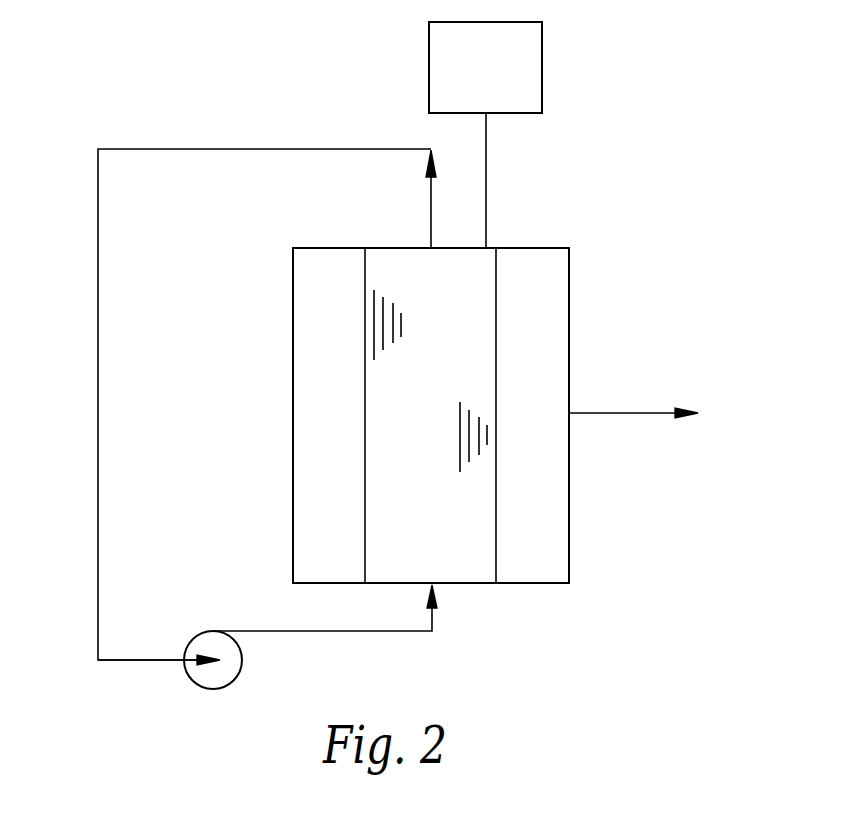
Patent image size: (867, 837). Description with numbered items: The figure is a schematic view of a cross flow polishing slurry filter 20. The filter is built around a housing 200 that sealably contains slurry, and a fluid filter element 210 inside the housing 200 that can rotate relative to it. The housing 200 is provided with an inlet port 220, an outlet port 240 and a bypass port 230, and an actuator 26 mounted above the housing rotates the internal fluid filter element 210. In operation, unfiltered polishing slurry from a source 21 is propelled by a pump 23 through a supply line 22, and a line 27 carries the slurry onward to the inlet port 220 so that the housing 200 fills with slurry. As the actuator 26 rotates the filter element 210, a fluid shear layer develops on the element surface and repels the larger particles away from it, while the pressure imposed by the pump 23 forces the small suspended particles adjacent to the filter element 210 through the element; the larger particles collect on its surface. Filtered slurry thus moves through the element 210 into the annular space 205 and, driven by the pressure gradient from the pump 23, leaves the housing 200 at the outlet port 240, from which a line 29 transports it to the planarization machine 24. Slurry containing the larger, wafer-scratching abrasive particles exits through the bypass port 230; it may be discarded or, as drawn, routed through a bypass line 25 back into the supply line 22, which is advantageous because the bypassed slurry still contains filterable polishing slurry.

The polishing slurry filter 20 is at (667, 112).
The source of unfiltered polishing slurry 21 is at (84, 673).
The supply line 22 is at (135, 662).
The pump 23 is at (197, 632).
The planarization machine 24 is at (739, 425).
The bypass line 25 is at (290, 147).
The actuator 26 is at (497, 82).
The line 27 is at (326, 631).
The line 29 is at (627, 413).
The housing 200 is at (570, 532).
The annular space 205 is at (568, 281).
The fluid filter element 210 is at (485, 527).
The inlet port 220 is at (435, 585).
The bypass port 230 is at (430, 227).
The outlet port 240 is at (569, 413).